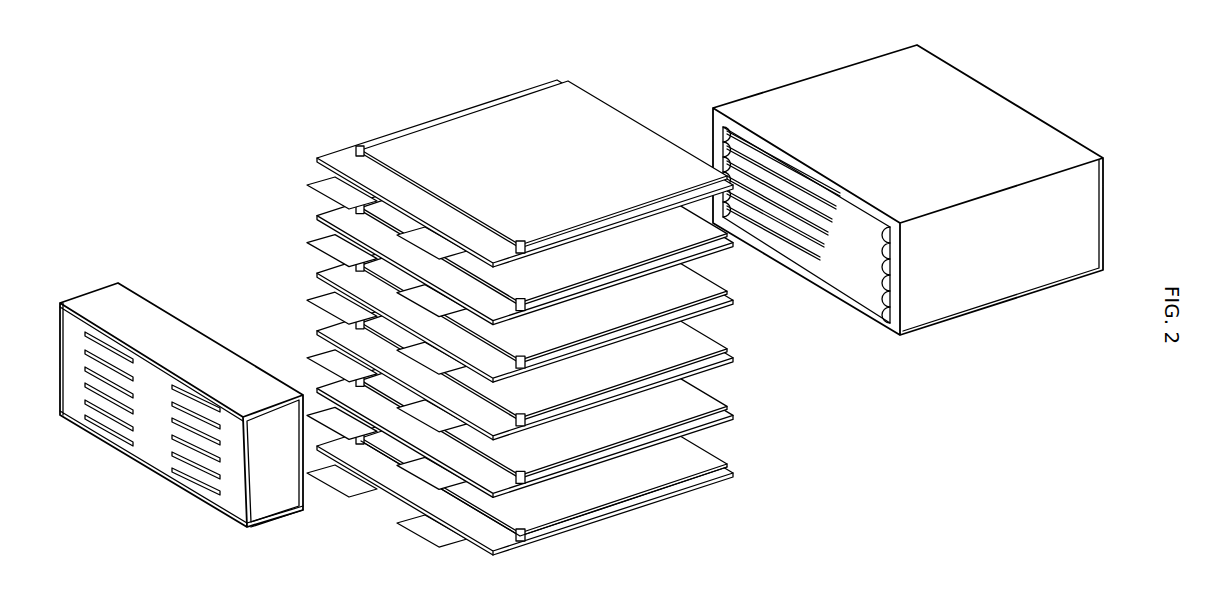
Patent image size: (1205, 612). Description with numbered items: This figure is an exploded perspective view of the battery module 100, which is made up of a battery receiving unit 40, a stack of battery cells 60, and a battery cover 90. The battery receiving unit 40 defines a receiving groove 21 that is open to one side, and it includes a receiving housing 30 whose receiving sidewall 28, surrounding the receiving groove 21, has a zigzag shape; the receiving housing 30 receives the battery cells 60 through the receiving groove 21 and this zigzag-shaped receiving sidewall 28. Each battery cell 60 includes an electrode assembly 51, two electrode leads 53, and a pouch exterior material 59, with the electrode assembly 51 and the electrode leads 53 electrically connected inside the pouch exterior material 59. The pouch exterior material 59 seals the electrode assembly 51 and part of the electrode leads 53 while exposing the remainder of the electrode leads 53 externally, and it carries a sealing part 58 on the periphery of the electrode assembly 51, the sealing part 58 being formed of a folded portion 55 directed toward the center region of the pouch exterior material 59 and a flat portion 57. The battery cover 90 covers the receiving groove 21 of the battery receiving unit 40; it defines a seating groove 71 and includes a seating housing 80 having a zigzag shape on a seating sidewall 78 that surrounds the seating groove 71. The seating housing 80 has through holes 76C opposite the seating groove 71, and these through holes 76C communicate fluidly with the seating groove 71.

The battery module 100 is at (273, 81).
The receiving groove 21 is at (843, 268).
The receiving sidewall 28 is at (714, 134).
The receiving housing 30 is at (879, 192).
The battery receiving unit 40 is at (879, 190).
The electrode assembly 51 is at (431, 530).
The electrode leads 53 is at (430, 540).
The folded portion 55 is at (720, 477).
The flat portion 57 is at (720, 458).
The sealing part 58 is at (575, 481).
The pouch exterior material 59 is at (620, 485).
The battery cell 60 is at (715, 407).
The seating groove 71 is at (200, 433).
The through holes 76C is at (196, 487).
The seating sidewall 78 is at (293, 508).
The seating housing 80 is at (282, 545).
The battery cover 90 is at (267, 513).